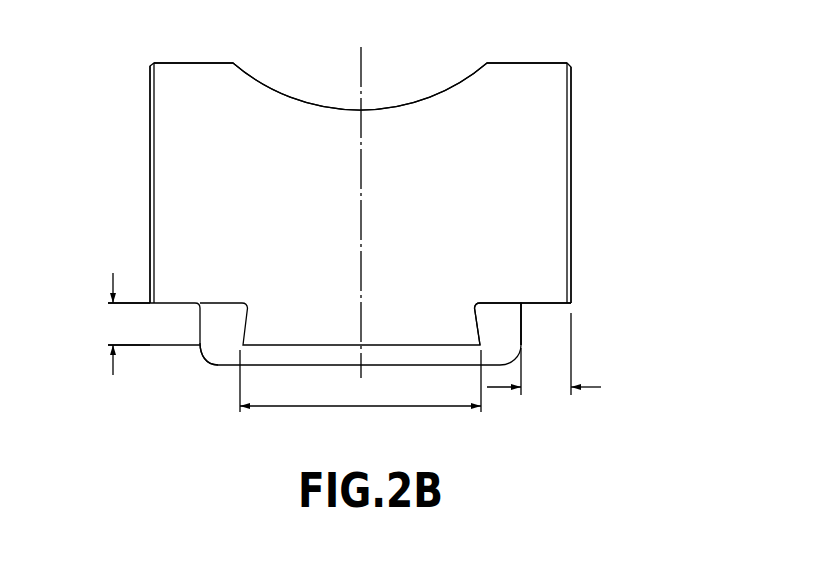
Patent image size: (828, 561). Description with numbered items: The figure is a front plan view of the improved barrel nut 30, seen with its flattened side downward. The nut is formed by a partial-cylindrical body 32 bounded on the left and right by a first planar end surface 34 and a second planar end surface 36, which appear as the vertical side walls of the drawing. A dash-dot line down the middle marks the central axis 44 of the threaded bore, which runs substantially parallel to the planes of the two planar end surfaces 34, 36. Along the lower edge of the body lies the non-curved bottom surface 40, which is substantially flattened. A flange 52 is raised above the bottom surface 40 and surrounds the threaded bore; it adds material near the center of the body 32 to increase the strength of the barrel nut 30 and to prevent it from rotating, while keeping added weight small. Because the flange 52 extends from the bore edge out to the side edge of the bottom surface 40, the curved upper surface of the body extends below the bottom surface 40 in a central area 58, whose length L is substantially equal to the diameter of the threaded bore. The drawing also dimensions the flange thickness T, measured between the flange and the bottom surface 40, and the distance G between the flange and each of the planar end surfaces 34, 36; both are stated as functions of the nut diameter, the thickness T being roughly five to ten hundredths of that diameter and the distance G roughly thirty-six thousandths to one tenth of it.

The barrel nut 30 is at (597, 140).
The partial-cylindrical body 32 is at (533, 92).
The first planar end surface 34 is at (150, 133).
The second planar end surface 36 is at (572, 230).
The bottom surface 40 is at (548, 305).
The central axis 44 is at (361, 57).
The flange 52 is at (495, 327).
The central area 58 is at (282, 323).
The flange thickness T is at (112, 323).
The length L is at (361, 405).
The distance G is at (542, 387).